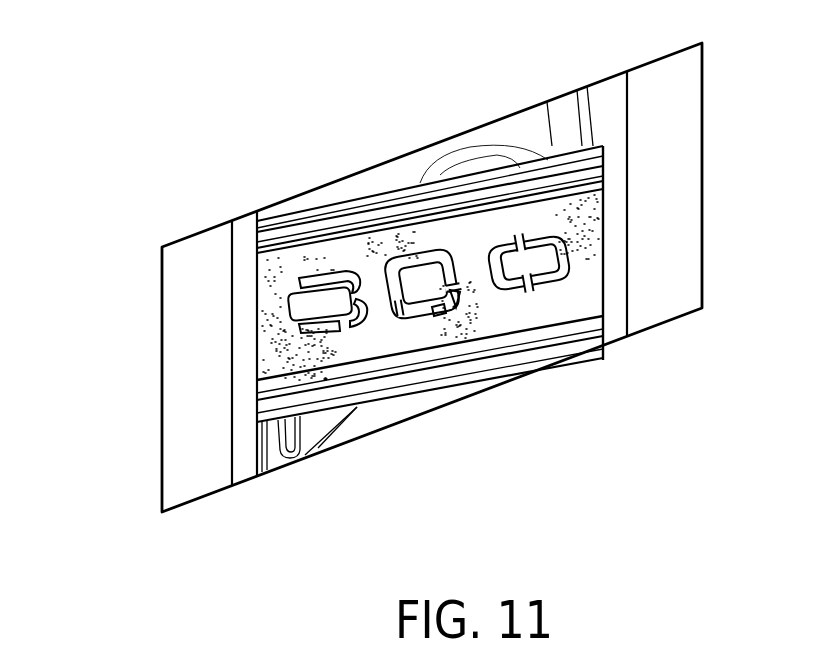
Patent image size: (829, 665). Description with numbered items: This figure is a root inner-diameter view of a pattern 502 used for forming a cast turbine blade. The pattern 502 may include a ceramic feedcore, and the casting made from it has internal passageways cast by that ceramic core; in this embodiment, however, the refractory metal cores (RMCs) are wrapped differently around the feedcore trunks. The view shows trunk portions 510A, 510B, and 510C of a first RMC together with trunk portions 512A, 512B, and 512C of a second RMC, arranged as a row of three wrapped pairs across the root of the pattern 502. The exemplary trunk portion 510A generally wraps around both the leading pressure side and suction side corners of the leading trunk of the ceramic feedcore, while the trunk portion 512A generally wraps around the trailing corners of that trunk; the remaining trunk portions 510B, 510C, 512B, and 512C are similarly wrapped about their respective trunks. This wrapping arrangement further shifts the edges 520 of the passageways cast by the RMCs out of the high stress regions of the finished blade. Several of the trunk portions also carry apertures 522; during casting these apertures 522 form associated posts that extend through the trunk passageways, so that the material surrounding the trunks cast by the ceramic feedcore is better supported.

The pattern 502 is at (202, 213).
The trunk portion of first RMC 510A is at (563, 223).
The trunk portion of first RMC 510B is at (412, 318).
The trunk portion of first RMC 510C is at (328, 333).
The trunk portion of second RMC 512A is at (505, 230).
The trunk portion of second RMC 512B is at (413, 255).
The trunk portion of second RMC 512C is at (323, 262).
The edges of passageways 520 is at (433, 317).
The apertures 522 is at (465, 277).